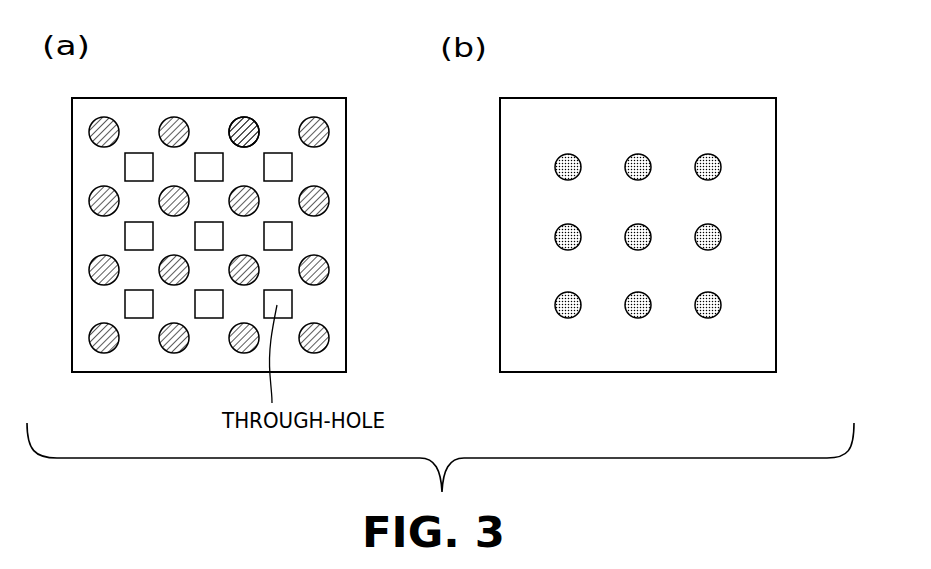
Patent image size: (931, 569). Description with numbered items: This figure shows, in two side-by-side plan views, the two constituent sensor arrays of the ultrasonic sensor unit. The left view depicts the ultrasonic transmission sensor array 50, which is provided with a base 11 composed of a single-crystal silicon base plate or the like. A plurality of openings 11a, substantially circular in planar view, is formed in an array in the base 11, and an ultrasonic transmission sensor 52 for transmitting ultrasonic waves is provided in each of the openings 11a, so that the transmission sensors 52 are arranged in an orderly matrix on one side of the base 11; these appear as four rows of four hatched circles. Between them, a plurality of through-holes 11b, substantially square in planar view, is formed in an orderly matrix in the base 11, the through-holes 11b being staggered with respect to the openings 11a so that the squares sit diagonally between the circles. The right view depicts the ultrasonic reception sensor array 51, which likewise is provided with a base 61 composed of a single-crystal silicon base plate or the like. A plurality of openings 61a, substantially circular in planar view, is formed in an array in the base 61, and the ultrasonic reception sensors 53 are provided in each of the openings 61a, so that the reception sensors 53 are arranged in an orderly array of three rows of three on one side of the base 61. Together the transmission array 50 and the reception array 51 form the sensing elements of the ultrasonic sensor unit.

The ultrasonic transmission sensor array 50 is at (240, 189).
The base 11 is at (296, 98).
The openings 11a is at (176, 125).
The ultrasonic transmission sensor 52 is at (242, 127).
The through-holes 11b is at (267, 163).
The ultrasonic reception sensor array 51 is at (669, 190).
The base 61 is at (654, 98).
The ultrasonic reception sensors 53 is at (712, 157).
The openings 61a is at (705, 233).